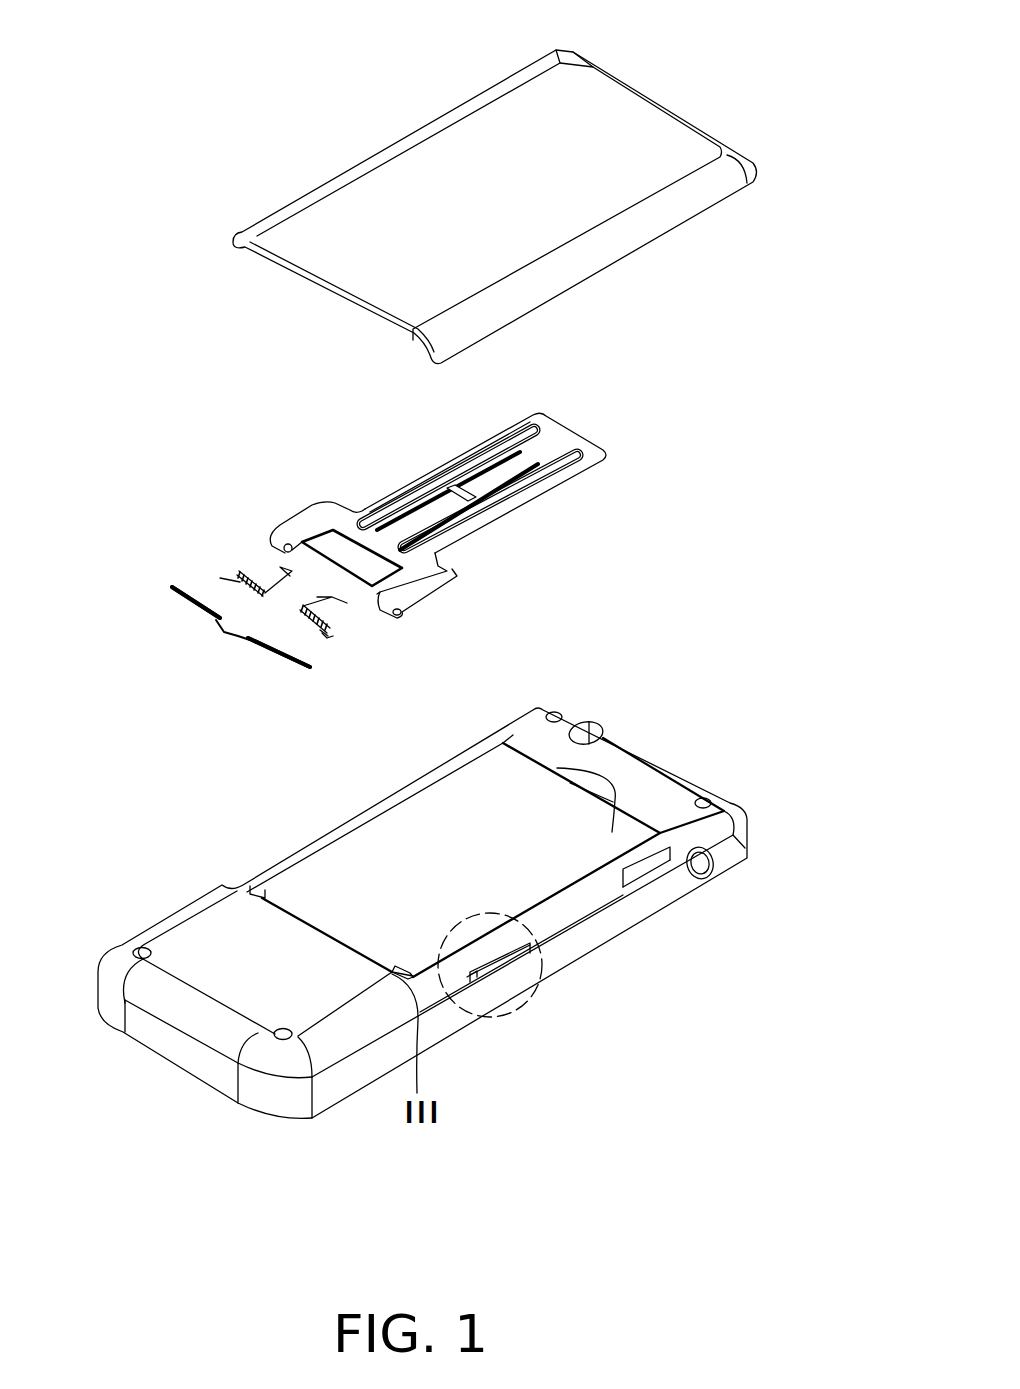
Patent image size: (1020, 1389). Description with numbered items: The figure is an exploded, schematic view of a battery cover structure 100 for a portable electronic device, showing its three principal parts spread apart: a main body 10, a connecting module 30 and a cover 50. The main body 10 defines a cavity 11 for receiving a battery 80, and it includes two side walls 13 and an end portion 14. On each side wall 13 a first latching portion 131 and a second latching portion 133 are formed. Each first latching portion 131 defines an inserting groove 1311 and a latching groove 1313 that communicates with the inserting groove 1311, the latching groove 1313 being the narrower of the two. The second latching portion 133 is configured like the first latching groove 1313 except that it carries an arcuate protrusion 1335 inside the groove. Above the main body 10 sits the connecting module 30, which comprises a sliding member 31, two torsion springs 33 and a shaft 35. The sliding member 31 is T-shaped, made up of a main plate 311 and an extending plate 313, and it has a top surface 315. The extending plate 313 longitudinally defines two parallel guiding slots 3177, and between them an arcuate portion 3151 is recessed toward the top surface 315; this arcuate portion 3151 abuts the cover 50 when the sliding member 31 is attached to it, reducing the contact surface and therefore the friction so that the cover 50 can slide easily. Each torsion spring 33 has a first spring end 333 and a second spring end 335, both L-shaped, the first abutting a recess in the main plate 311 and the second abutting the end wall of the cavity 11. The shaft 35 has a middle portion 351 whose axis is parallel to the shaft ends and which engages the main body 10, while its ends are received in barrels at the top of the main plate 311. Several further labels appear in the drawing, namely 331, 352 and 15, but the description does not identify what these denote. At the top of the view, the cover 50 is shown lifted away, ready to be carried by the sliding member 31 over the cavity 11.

The battery cover structure 100 is at (418, 32).
The cover 50 is at (330, 228).
The connecting module 30 is at (238, 458).
The main plate 311 is at (310, 522).
The sliding member 31 is at (275, 540).
The extending plate 313 is at (435, 473).
The top surface 315 is at (561, 433).
The guiding slots 3177 is at (490, 457).
The arcuate portion 3151 is at (473, 503).
The torsion springs 33 is at (243, 580).
The second spring 331 is at (327, 630).
The first spring end 333 is at (347, 603).
The second spring end 335 is at (323, 635).
The shaft 35 is at (175, 587).
The middle portion 351 is at (227, 633).
The second rod portion 352 is at (290, 660).
The main body 10 is at (220, 922).
The cavity 11 is at (378, 813).
The recess wall 15 is at (292, 913).
The end portion 14 is at (603, 755).
The battery 80 is at (617, 830).
The side walls 13 is at (548, 917).
The first latching portion 131 is at (763, 960).
The inserting groove 1311 is at (692, 868).
The latching groove 1313 is at (655, 862).
The second latching portion 133 is at (508, 955).
The arcuate protrusion 1335 is at (500, 968).